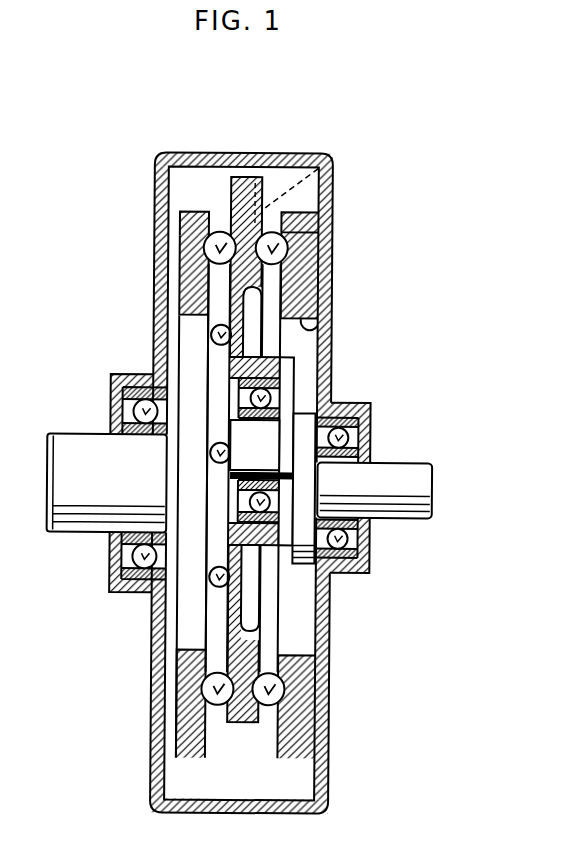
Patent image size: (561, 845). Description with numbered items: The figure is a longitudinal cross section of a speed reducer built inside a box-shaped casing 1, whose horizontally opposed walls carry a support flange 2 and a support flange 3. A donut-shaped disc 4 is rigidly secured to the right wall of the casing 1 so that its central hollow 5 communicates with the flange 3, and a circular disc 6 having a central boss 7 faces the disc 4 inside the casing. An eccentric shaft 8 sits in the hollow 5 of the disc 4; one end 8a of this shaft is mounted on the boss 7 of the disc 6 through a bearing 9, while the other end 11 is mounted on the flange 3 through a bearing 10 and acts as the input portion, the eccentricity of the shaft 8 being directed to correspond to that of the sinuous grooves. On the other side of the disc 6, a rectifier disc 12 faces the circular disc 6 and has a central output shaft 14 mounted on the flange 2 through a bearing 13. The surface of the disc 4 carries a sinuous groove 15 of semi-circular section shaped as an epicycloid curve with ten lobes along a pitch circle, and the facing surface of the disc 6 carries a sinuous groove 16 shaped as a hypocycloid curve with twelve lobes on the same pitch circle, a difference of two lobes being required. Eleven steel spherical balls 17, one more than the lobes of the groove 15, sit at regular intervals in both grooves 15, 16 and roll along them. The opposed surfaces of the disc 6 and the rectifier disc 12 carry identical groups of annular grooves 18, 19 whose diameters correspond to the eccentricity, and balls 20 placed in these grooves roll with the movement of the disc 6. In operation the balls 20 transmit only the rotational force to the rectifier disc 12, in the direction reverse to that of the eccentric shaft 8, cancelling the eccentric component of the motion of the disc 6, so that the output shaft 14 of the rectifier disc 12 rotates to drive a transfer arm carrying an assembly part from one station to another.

The casing 1 is at (295, 148).
The support flange 2 is at (124, 377).
The support flange 3 is at (371, 412).
The donut-shaped disc 4 is at (316, 212).
The central hollow 5 is at (302, 322).
The circular disc 6 is at (248, 185).
The central boss 7 is at (280, 382).
The eccentric shaft 8 is at (306, 573).
The one end of the eccentric shaft 8a is at (243, 440).
The bearing 9 is at (284, 400).
The bearing 10 is at (353, 573).
The other end of the eccentric shaft 11 is at (400, 470).
The rectifier disc 12 is at (186, 240).
The bearing 13 is at (131, 595).
The output shaft 14 is at (80, 526).
The sinuous groove 15 is at (291, 262).
The sinuous groove 16 is at (333, 166).
The spherical balls 17 is at (288, 245).
The annular grooves 18 is at (208, 200).
The annular grooves 19 is at (208, 300).
The balls 20 is at (186, 218).